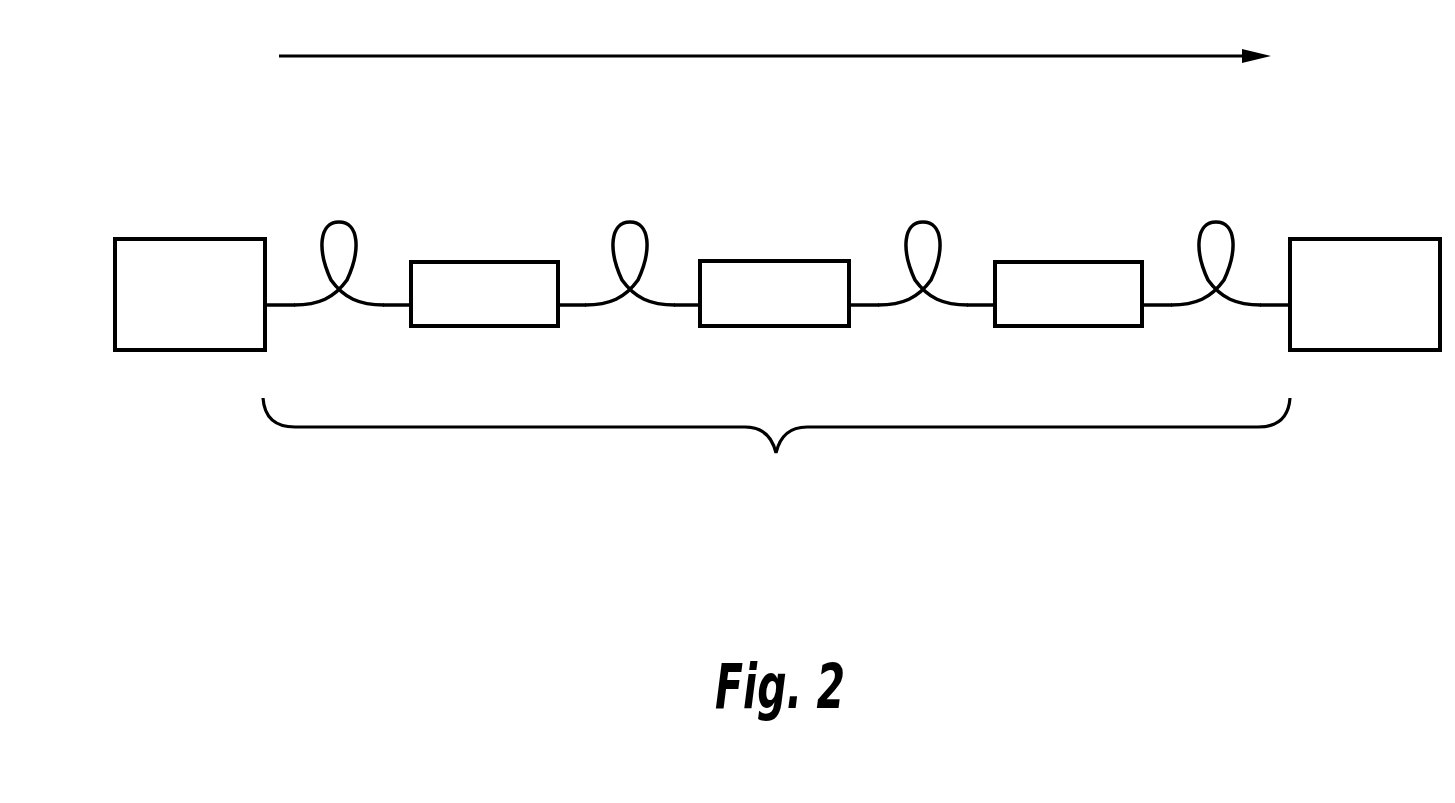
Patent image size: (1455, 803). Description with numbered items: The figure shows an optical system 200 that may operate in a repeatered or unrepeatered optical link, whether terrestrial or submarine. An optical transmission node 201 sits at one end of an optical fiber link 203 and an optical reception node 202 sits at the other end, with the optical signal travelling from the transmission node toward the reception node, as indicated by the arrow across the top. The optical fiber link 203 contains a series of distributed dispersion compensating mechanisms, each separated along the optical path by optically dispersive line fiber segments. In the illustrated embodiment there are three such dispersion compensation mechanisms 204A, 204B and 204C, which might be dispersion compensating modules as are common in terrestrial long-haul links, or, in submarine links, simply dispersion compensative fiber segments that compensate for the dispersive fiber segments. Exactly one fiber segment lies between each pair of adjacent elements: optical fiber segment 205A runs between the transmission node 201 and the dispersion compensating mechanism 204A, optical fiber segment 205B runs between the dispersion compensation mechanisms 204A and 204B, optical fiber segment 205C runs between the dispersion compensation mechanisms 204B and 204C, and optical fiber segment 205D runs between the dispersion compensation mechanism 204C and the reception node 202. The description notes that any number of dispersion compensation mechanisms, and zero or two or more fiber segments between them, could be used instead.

The optical system 200 is at (426, 40).
The optical transmission node 201 is at (226, 312).
The optical reception node 202 is at (1392, 312).
The optical fiber link 203 is at (776, 455).
The dispersion compensation mechanism 204A is at (517, 311).
The dispersion compensation mechanism 204B is at (808, 311).
The dispersion compensation mechanism 204C is at (1110, 311).
The optical fiber segment 205A is at (339, 287).
The optical fiber segment 205B is at (630, 287).
The optical fiber segment 205C is at (923, 287).
The optical fiber segment 205D is at (1216, 287).